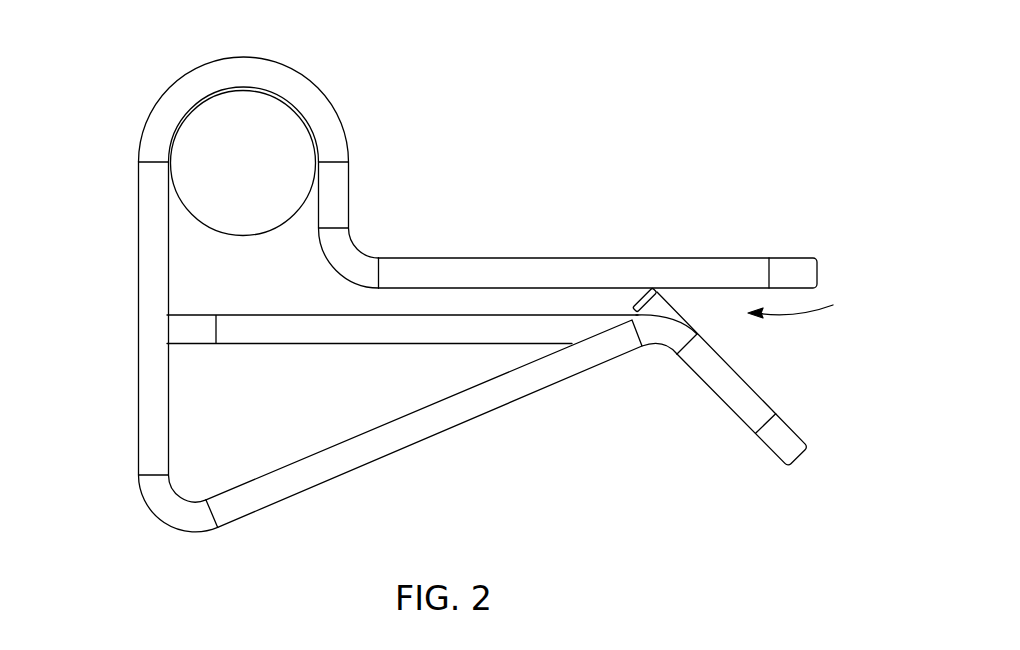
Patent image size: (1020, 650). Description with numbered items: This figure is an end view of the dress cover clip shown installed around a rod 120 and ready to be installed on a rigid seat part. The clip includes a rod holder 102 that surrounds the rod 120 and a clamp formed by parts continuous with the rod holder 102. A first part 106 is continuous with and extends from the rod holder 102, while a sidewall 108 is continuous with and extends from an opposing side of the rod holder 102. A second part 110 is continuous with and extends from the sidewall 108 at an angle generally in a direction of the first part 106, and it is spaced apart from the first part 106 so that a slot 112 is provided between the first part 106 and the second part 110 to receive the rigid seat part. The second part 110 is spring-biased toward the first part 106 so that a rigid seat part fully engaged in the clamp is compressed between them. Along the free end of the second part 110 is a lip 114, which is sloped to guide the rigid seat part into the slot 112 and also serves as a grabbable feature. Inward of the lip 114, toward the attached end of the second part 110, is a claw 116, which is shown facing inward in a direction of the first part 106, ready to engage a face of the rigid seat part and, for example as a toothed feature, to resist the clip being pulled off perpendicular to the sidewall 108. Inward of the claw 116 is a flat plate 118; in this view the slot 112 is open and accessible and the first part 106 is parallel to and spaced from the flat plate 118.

The rod holder 102 is at (243, 75).
The rod 120 is at (290, 143).
The sidewall 108 is at (153, 233).
The first part 106 is at (728, 258).
The flat plate 118 is at (328, 332).
The second part 110 is at (378, 442).
The lip 114 is at (762, 397).
The claw 116 is at (646, 293).
The slot 112 is at (810, 305).